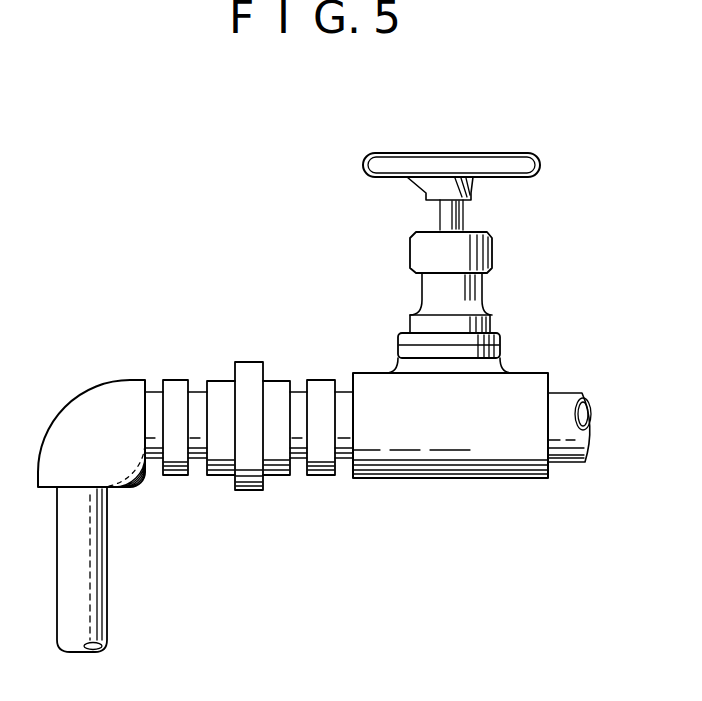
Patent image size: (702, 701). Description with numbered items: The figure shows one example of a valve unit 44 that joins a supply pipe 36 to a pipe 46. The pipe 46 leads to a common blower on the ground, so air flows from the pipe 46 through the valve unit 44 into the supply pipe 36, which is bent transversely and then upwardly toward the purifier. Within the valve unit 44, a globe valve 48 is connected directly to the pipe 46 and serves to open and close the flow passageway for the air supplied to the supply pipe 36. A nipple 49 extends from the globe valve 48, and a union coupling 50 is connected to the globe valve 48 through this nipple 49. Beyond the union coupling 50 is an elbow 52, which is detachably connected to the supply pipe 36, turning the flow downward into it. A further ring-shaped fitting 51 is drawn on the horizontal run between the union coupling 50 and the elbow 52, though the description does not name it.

The supply pipe 36 is at (88, 543).
The valve unit 44 is at (549, 283).
The pipe 46 is at (563, 463).
The globe valve 48 is at (500, 352).
The nipple 49 is at (317, 378).
The union coupling 50 is at (252, 372).
The coupling ring 51 is at (175, 392).
The elbow 52 is at (117, 393).